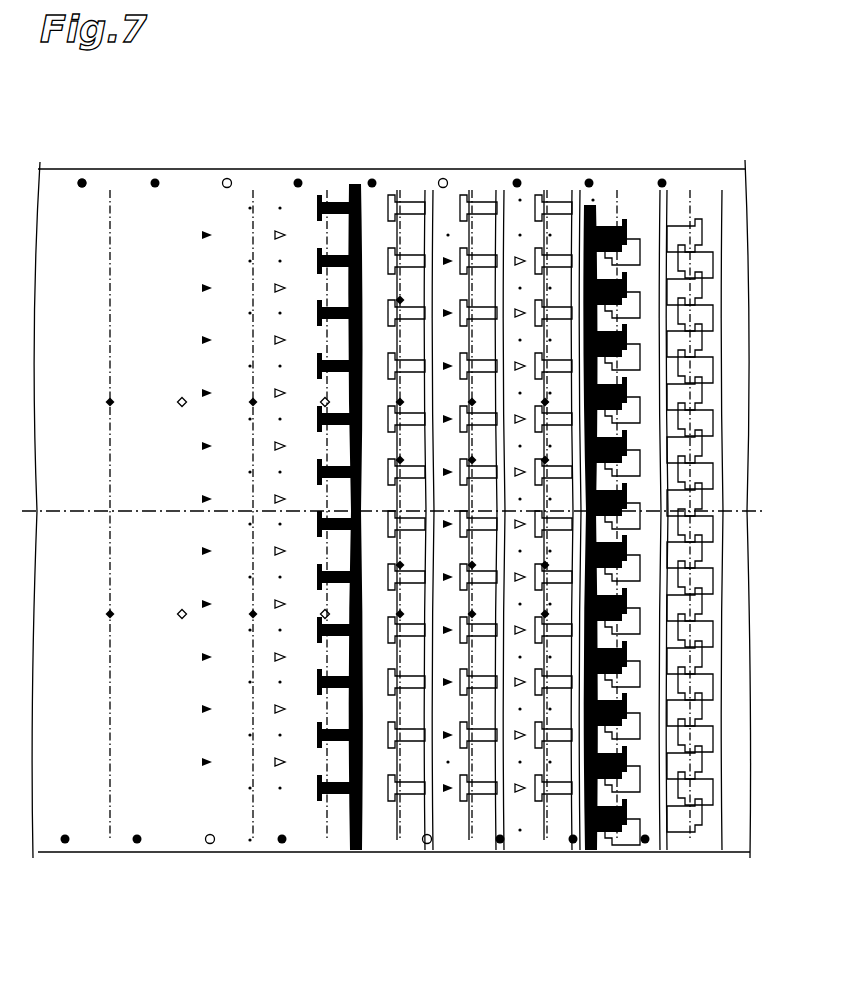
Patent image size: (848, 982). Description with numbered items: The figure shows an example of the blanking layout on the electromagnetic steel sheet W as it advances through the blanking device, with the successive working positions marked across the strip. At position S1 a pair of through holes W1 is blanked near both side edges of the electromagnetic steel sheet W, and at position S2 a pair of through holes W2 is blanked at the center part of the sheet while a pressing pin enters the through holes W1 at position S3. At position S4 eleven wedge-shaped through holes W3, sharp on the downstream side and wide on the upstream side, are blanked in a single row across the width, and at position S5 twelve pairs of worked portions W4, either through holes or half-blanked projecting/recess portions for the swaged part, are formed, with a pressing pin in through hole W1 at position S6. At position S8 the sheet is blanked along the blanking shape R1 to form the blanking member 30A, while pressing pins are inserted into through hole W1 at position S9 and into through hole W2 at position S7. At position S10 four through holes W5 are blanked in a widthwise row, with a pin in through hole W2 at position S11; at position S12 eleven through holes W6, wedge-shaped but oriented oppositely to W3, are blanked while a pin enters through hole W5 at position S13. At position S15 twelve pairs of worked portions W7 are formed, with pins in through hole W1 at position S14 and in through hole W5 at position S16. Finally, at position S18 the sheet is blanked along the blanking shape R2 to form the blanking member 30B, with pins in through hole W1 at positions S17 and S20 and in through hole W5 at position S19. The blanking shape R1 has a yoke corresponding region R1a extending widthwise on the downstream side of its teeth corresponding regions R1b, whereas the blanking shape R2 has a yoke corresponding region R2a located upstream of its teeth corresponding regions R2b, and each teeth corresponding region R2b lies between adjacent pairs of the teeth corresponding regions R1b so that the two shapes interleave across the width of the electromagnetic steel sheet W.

The electromagnetic steel sheet W is at (717, 168).
The through holes W1 is at (82, 178).
The through holes W2 is at (109, 398).
The through holes W3 is at (206, 230).
The worked portions W4 is at (279, 205).
The through holes W5 is at (398, 296).
The through holes W6 is at (448, 255).
The worked portions W7 is at (520, 238).
The blanking shape R1 is at (396, 124).
The yoke corresponding region R1a is at (353, 192).
The teeth corresponding regions R1b is at (338, 198).
The blanking shape R2 is at (672, 124).
The yoke corresponding region R2a is at (589, 203).
The teeth corresponding regions R2b is at (631, 228).
The blanking member 30A is at (363, 218).
The blanking member 30B is at (548, 228).
The position S1 is at (65, 857).
The position S2 is at (110, 857).
The position S3 is at (137, 857).
The position S4 is at (210, 857).
The position S5 is at (247, 857).
The position S6 is at (282, 857).
The position S7 is at (255, 857).
The position S8 is at (327, 857).
The position S9 is at (355, 857).
The position S10 is at (400, 857).
The position S11 is at (427, 857).
The position S12 is at (448, 857).
The position S13 is at (472, 857).
The position S14 is at (500, 857).
The position S15 is at (520, 857).
The position S16 is at (547, 857).
The position S17 is at (573, 857).
The position S18 is at (593, 857).
The position S19 is at (617, 857).
The position S20 is at (645, 857).